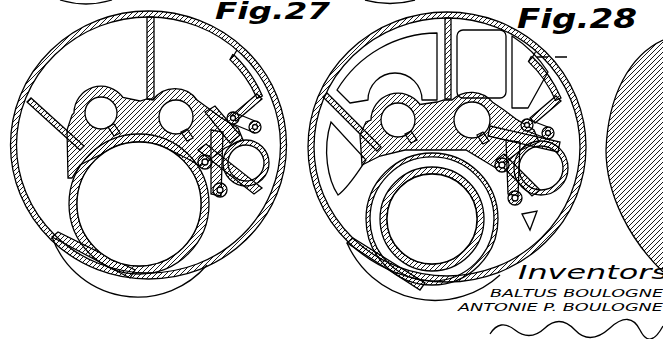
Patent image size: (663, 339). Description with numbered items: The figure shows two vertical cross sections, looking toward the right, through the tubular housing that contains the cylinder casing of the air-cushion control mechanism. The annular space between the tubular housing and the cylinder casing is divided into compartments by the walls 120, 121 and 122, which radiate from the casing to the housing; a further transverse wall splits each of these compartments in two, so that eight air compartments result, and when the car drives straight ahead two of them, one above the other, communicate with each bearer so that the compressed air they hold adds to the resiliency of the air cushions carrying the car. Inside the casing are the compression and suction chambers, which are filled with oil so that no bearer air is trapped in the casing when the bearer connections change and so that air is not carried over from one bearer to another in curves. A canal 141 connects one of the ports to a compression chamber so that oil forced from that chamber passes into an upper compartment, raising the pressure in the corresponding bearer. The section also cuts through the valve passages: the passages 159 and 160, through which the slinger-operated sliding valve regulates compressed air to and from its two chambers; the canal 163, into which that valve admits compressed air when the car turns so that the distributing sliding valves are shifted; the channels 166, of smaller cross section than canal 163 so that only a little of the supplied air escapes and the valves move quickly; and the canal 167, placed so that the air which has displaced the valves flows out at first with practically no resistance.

In FIG. 27, the canal 141 is at (136, 148).
In FIG. 28, the canal 141 is at (433, 148).
In FIG. 27, the canal 167 is at (139, 119).
In FIG. 28, the channels 166 is at (435, 123).
In FIG. 27, the passage 160 is at (193, 164).
In FIG. 27, the passage 159 is at (214, 191).
In FIG. 28, the wall 120 is at (343, 97).
In FIG. 28, the wall 121 is at (452, 57).
In FIG. 28, the wall 122 is at (540, 90).
In FIG. 28, the canal 163 is at (564, 58).